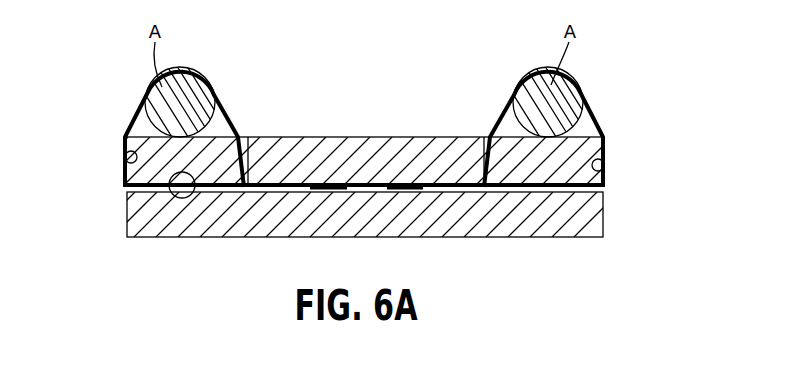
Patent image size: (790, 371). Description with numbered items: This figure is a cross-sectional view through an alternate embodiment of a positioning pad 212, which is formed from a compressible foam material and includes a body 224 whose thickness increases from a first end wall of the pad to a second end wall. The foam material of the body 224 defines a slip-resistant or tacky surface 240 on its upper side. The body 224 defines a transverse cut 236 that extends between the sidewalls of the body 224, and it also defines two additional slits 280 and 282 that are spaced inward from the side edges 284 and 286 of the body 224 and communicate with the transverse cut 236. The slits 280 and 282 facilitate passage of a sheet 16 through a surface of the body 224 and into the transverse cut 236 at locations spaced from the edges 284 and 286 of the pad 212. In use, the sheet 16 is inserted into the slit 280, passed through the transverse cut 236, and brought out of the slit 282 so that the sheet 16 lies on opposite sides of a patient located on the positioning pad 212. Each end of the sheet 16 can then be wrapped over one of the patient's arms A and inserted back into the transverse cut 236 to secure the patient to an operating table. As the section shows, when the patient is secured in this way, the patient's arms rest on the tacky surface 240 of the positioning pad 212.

The sheet 16 is at (596, 110).
The positioning pad 212 is at (493, 239).
The body 224 is at (553, 222).
The transverse cut 236 is at (191, 178).
The tacky surface 240 is at (348, 137).
The slit 280 is at (486, 137).
The slit 282 is at (246, 137).
The side edge 284 is at (601, 170).
The side edge 286 is at (125, 170).